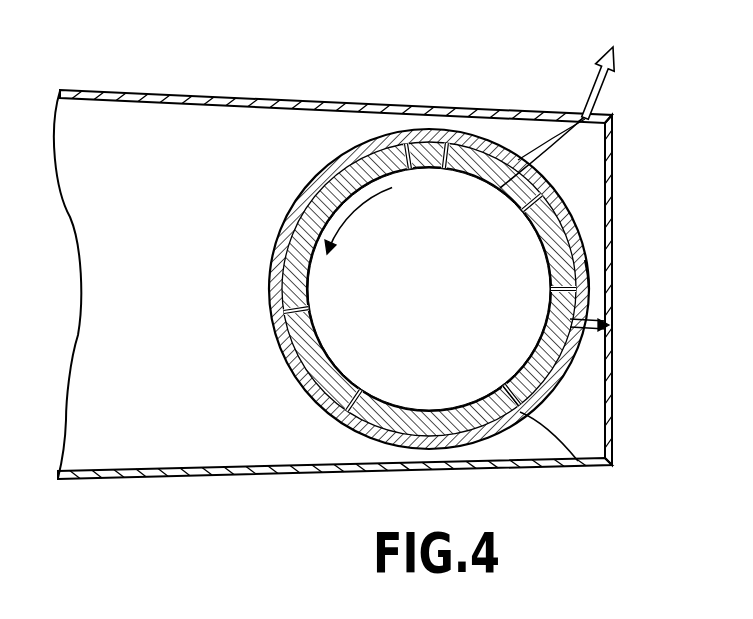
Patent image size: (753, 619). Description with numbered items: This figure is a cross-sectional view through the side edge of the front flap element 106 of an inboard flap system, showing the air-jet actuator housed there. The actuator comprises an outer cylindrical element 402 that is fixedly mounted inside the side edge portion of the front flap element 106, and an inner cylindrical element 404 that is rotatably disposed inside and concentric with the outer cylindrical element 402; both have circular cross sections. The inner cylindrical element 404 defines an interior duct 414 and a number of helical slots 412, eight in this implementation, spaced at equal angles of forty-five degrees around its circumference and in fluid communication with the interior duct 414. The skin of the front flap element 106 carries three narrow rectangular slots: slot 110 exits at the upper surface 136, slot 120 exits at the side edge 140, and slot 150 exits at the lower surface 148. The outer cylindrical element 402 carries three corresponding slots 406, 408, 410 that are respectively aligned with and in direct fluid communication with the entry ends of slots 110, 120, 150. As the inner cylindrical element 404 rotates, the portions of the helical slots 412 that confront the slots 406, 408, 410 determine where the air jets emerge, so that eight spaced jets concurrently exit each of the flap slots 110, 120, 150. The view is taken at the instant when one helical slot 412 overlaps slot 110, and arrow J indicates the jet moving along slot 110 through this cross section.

The front flap element 106 is at (443, 104).
The upper surface 136 is at (288, 98).
The lower surface 148 is at (293, 483).
The side edge 140 is at (612, 175).
The outer cylindrical element 402 is at (385, 133).
The inner cylindrical element 404 is at (292, 371).
The helical slots 412 is at (302, 305).
The interior duct 414 is at (451, 319).
The slot 406 is at (505, 160).
The slot 110 is at (575, 112).
The arrow indicating jet J is at (606, 80).
The slot 408 is at (582, 302).
The slot 120 is at (610, 330).
The slot 150 is at (580, 463).
The slot 410 is at (519, 410).